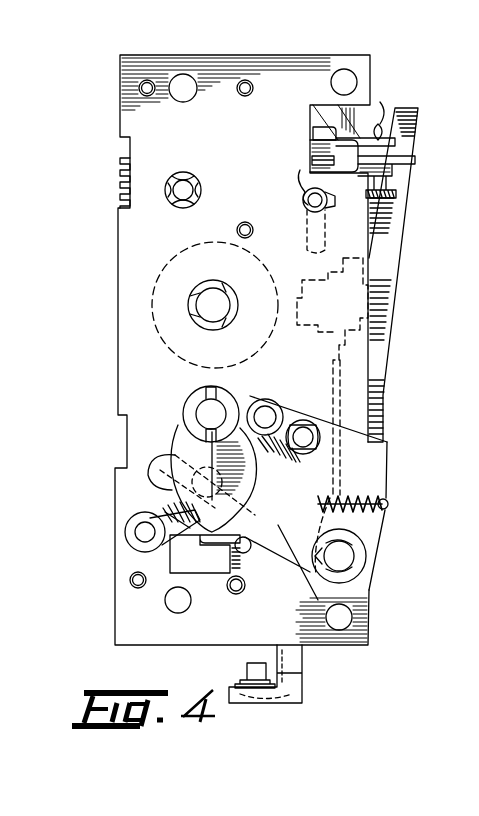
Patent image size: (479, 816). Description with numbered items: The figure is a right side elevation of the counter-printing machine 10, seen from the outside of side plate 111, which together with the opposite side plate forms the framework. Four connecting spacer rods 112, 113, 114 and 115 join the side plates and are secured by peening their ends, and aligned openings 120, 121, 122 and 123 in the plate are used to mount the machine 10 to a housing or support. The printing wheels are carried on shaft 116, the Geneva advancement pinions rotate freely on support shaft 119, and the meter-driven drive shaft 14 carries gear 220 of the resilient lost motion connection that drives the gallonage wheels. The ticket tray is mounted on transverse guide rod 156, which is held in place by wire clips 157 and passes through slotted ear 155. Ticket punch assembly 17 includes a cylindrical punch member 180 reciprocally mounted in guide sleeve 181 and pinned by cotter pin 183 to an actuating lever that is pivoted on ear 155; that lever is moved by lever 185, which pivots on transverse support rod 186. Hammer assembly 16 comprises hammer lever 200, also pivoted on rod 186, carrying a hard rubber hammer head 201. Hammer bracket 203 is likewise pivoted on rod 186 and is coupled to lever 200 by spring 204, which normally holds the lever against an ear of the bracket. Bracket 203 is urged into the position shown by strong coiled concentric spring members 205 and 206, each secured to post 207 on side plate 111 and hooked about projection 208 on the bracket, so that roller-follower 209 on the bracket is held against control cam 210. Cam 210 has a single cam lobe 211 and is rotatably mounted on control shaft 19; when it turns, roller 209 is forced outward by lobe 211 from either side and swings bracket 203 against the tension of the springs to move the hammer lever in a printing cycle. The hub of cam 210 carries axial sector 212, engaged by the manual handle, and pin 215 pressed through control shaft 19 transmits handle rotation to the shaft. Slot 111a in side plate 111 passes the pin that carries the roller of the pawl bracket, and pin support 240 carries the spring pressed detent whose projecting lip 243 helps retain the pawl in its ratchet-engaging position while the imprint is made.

The counter-printing machine 10 is at (427, 269).
The drive shaft 14 is at (181, 184).
The hammer assembly 16 is at (395, 423).
The ticket punch assembly 17 is at (423, 144).
The control shaft 19 is at (200, 412).
The side plate 111 is at (228, 143).
The slot of side plate 111a is at (156, 470).
The connecting spacer rod 112 is at (139, 88).
The connecting spacer rod 113 is at (250, 93).
The connecting spacer rod 114 is at (130, 582).
The connecting spacer rod 115 is at (232, 590).
The shaft 116 is at (208, 290).
The support shaft 119 is at (250, 218).
The opening 120 is at (183, 74).
The opening 121 is at (352, 78).
The opening 122 is at (174, 606).
The opening 123 is at (350, 614).
The slotted ear 155 is at (340, 170).
The transverse guide rod 156 is at (309, 209).
The wire clips 157 is at (303, 192).
The cylindrical punch member 180 is at (388, 172).
The guide sleeve 181 is at (315, 135).
The cotter pin 183 is at (397, 112).
The lever 185 is at (392, 327).
The transverse support rod 186 is at (348, 562).
The hammer lever 200 is at (383, 404).
The hard rubber hammer head 201 is at (322, 280).
The hammer bracket 203 is at (358, 465).
The spring 204 is at (388, 507).
The coiled spring member 205 is at (176, 506).
The coiled spring member 206 is at (135, 516).
The post 207 is at (145, 532).
The projection 208 is at (306, 437).
The roller-follower 209 is at (278, 408).
The control cam 210 is at (177, 425).
The cam lobe 211 is at (232, 520).
The axial sector 212 is at (210, 398).
The pin 215 is at (232, 398).
The gear 220 is at (119, 190).
The pin support 240 is at (246, 552).
The projecting lip 243 is at (218, 543).